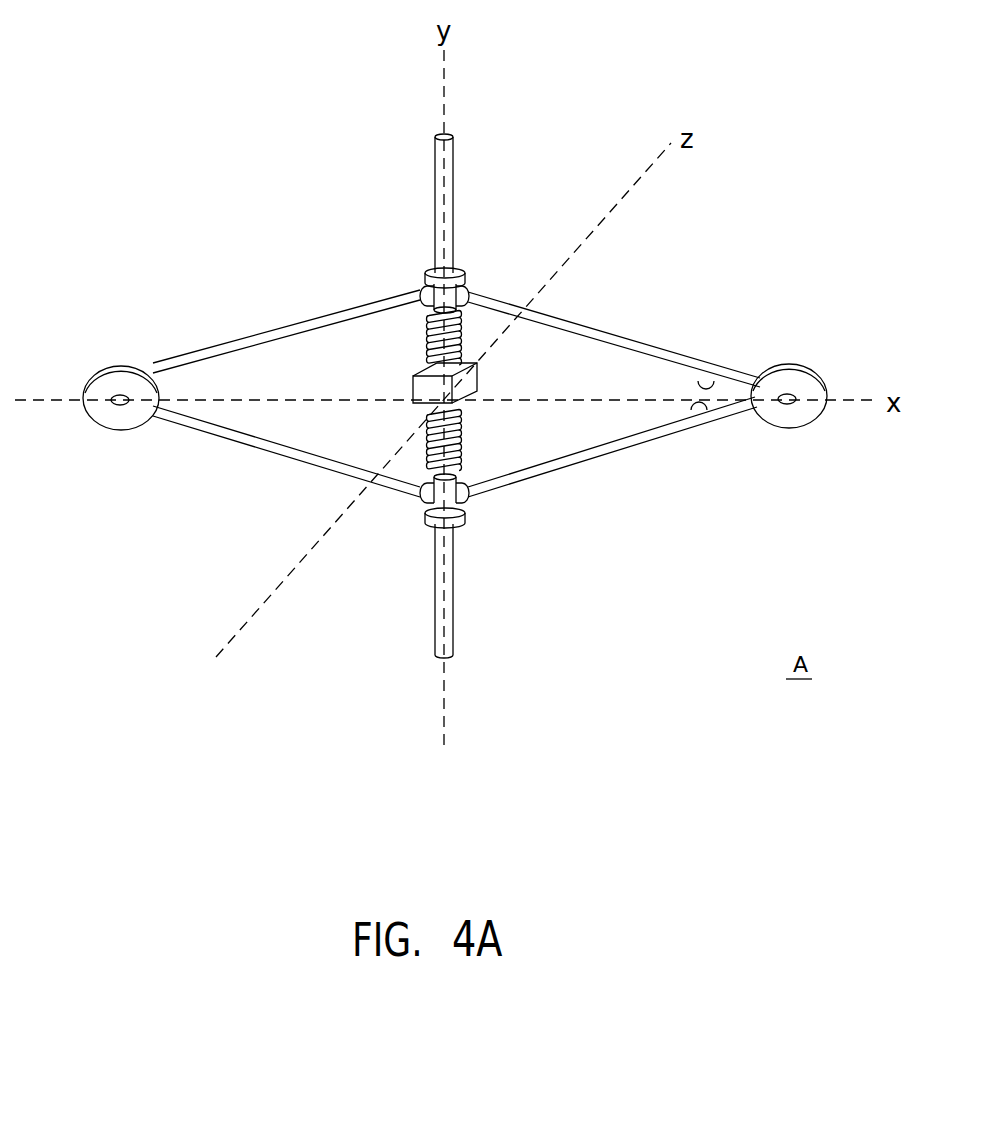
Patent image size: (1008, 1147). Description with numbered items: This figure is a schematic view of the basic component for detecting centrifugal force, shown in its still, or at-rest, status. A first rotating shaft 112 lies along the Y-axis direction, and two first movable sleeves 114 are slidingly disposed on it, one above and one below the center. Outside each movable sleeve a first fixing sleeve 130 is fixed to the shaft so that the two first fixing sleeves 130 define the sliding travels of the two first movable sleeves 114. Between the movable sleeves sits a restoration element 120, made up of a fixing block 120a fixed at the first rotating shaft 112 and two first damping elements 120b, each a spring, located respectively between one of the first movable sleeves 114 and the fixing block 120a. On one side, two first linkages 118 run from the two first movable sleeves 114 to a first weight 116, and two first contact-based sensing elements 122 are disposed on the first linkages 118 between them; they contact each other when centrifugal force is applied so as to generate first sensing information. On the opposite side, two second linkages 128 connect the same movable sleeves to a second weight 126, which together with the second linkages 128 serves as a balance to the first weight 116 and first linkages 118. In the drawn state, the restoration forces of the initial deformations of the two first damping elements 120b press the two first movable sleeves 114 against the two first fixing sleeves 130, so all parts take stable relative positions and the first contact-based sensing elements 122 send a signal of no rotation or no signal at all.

The first rotating shaft 112 is at (445, 174).
The first movable sleeves 114 is at (473, 270).
The first weight 116 is at (820, 384).
The first linkages 118 is at (642, 347).
The restoration element 120 is at (652, 536).
The fixing block 120a is at (468, 398).
The first damping elements 120b is at (460, 330).
The first contact-based sensing elements 122 is at (706, 378).
The second weight 126 is at (102, 402).
The second linkages 128 is at (280, 333).
The first fixing sleeves 130 is at (430, 270).